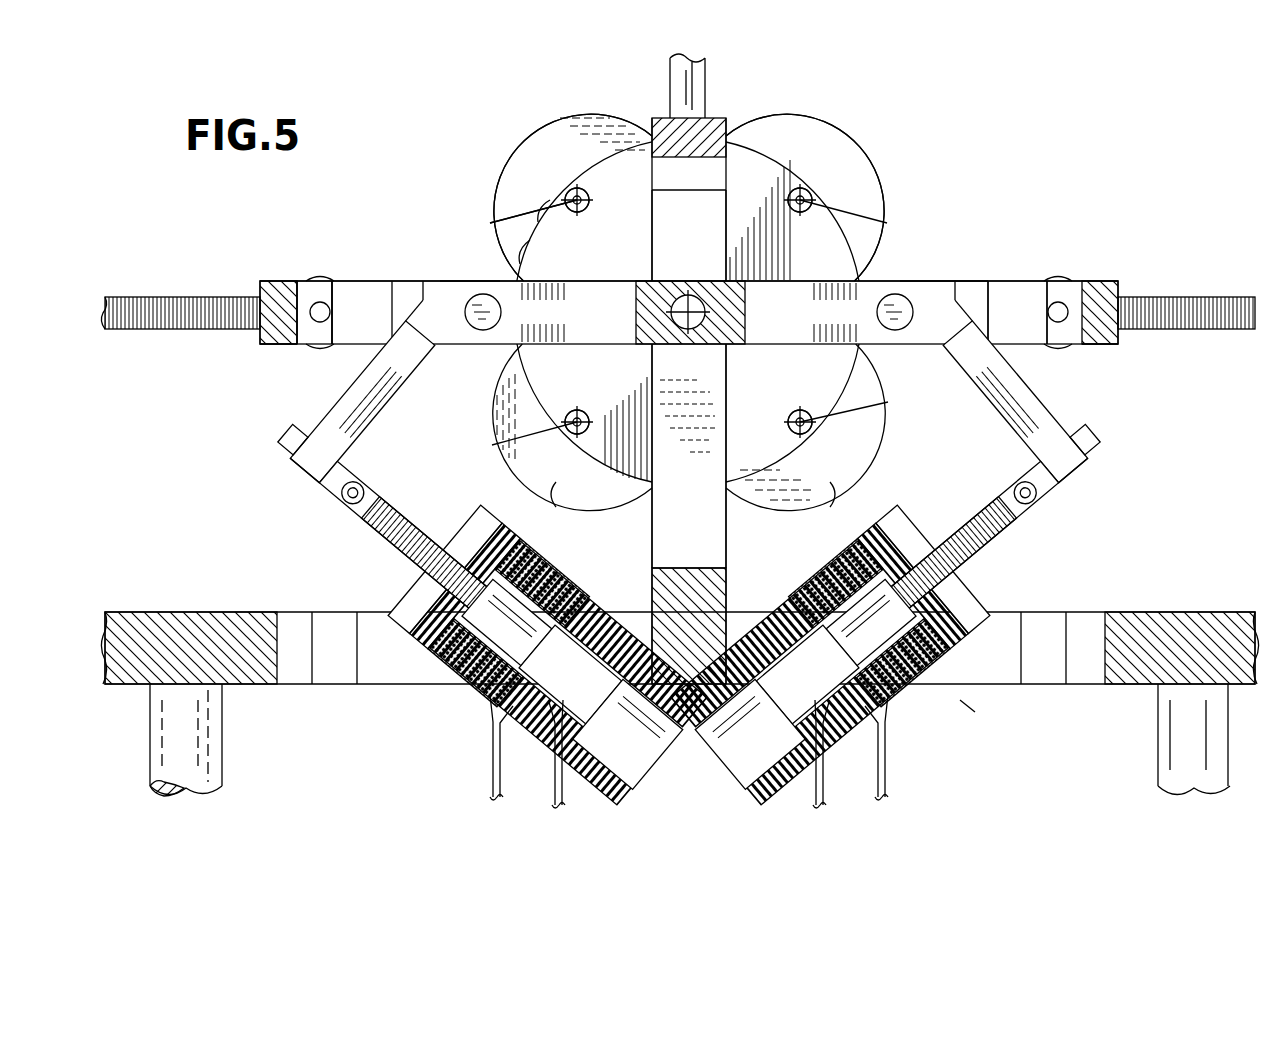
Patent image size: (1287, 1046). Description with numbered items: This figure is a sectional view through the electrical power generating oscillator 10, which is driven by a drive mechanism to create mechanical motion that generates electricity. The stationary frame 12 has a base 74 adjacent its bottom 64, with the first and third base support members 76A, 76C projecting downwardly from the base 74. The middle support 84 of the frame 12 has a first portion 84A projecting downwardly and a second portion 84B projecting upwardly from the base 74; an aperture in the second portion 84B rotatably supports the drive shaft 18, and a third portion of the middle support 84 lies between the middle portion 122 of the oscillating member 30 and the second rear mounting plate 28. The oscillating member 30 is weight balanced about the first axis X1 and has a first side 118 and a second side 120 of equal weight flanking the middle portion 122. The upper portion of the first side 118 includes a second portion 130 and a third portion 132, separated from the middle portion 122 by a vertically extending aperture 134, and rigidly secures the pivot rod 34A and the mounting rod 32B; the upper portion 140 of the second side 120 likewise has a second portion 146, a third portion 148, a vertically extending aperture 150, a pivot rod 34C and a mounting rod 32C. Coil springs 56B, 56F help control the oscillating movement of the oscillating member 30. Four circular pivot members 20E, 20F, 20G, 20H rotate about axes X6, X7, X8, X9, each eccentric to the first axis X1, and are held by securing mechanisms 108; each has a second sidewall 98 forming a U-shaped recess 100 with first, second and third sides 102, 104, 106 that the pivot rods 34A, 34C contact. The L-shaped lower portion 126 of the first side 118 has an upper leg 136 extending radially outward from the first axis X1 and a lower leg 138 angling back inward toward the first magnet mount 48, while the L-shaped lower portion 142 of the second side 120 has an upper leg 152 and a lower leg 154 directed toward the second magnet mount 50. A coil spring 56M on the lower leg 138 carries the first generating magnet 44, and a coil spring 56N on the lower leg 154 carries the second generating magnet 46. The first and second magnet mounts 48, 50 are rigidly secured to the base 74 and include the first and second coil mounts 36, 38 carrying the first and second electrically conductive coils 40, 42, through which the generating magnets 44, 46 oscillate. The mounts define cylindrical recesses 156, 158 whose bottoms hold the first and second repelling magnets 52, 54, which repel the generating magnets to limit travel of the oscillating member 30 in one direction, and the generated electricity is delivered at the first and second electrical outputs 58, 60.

The electrical power generating oscillator 10 is at (1020, 150).
The frame 12 is at (175, 605).
The drive shaft 18 is at (675, 276).
The pivot member 20E is at (565, 107).
The pivot member 20F is at (890, 152).
The pivot member 20G is at (895, 460).
The pivot member 20H is at (490, 420).
The second rear mounting plate 28 is at (580, 195).
The oscillating member 30 is at (440, 281).
The mounting rod 32B is at (331, 286).
The mounting rod 32C is at (1058, 306).
The pivot rod 34A is at (482, 313).
The pivot rod 34C is at (895, 318).
The first coil mount 36 is at (563, 565).
The second coil mount 38 is at (822, 560).
The first electrically conductive coil 40 is at (567, 576).
The second electrically conductive coil 42 is at (818, 576).
The first generating magnet 44 is at (495, 627).
The second generating magnet 46 is at (860, 627).
The first magnet mount 48 is at (405, 578).
The second magnet mount 50 is at (973, 578).
The first repelling magnet 52 is at (622, 747).
The second repelling magnet 54 is at (735, 747).
The coil spring 56B is at (168, 294).
The coil spring 56F is at (1210, 294).
The coil spring 56M is at (455, 553).
The coil spring 56N is at (930, 552).
The first electrical output 58 is at (493, 776).
The second electrical output 60 is at (887, 776).
The bottom 64 is at (970, 712).
The base 74 is at (231, 614).
The first base support member 76A is at (225, 715).
The third base support member 76C is at (1160, 733).
The middle support 84 is at (720, 117).
The first portion 84A is at (670, 65).
The second portion 84B is at (727, 378).
The second sidewall 98 is at (503, 176).
The U-shaped recess 100 is at (518, 205).
The first side 102 is at (525, 247).
The second side 104 is at (495, 228).
The third side 106 is at (553, 221).
The securing mechanism 108 is at (600, 205).
The first side 118 is at (260, 285).
The second side 120 is at (1118, 287).
The middle portion 122 is at (636, 312).
The L-shaped lower portion 126 is at (322, 414).
The second portion 130 is at (262, 342).
The third portion 132 is at (394, 285).
The vertically extending aperture 134 is at (322, 308).
The upper leg 136 is at (373, 378).
The lower leg 138 is at (385, 530).
The upper portion 140 is at (918, 280).
The L-shaped lower portion 142 is at (1055, 414).
The second portion 146 is at (1115, 340).
The third portion 148 is at (972, 286).
The vertically extending aperture 150 is at (1013, 296).
The upper leg 152 is at (1005, 376).
The lower leg 154 is at (995, 531).
The cylindrical recess 156 is at (552, 682).
The cylindrical recess 158 is at (787, 682).
The first axis X1 is at (692, 293).
The sixth axis X6 is at (575, 183).
The seventh axis X7 is at (806, 183).
The eighth axis X8 is at (807, 430).
The ninth axis X9 is at (565, 422).